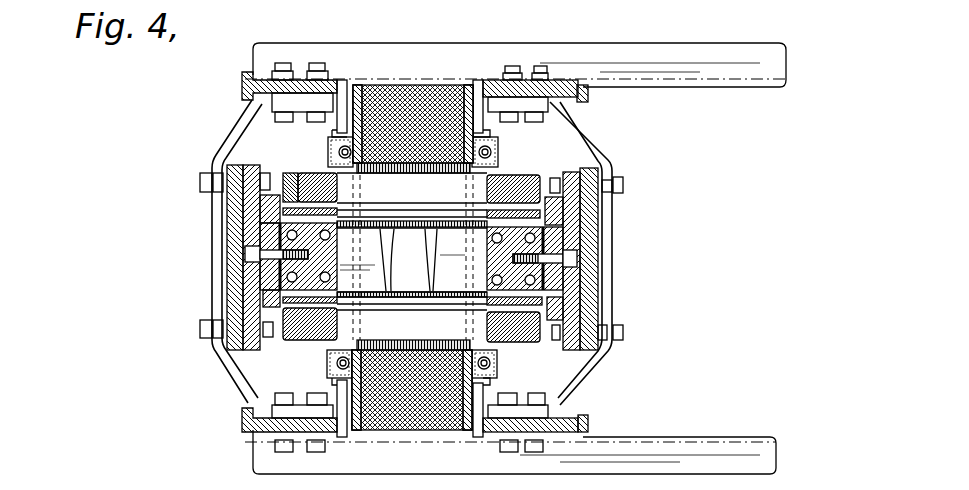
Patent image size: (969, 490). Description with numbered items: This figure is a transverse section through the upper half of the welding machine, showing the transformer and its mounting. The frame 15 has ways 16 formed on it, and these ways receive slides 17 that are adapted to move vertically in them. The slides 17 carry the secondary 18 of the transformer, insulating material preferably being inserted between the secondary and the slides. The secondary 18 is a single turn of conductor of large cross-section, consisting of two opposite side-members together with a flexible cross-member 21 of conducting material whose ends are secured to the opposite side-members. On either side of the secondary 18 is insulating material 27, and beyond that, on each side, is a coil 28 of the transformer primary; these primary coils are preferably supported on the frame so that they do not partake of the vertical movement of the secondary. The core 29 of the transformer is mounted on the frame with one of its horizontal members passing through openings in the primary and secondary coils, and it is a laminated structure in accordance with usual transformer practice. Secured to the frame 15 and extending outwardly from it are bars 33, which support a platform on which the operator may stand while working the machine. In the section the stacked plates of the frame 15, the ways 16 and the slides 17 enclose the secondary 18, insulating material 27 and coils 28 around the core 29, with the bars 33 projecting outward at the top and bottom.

The frame 15 is at (588, 94).
The ways 16 is at (245, 200).
The slides 17 is at (247, 285).
The secondary 18 is at (248, 272).
The flexible cross-member 21 is at (412, 256).
The insulating material 27 is at (298, 174).
The coil 28 is at (313, 172).
The core 29 is at (380, 97).
The bars 33 is at (700, 81).